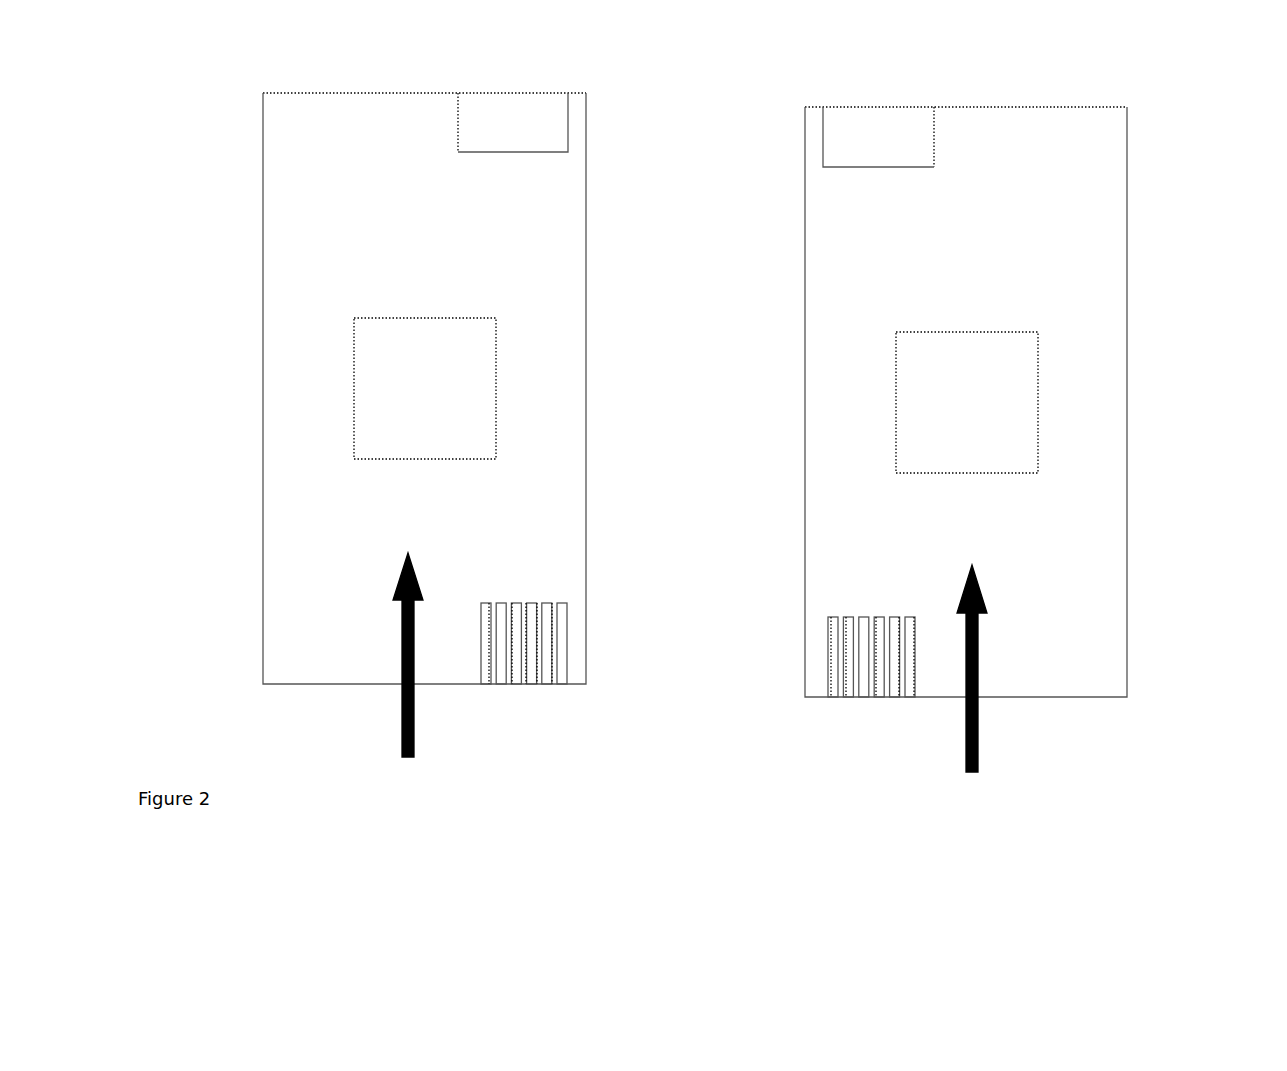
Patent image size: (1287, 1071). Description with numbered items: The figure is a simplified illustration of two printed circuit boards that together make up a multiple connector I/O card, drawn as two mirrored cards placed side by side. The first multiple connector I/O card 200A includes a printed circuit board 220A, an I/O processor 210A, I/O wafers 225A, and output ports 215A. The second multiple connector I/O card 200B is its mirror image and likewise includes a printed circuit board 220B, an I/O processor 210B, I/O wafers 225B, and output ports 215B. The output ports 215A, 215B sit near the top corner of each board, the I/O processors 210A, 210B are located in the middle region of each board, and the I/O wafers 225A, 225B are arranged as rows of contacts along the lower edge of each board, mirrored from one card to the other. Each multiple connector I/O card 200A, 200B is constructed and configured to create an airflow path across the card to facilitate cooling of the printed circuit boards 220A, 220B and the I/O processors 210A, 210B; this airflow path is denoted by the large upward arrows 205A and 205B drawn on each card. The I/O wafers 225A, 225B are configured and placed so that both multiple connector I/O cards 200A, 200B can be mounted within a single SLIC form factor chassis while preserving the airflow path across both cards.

The multiple connector I/O card 200A is at (630, 183).
The multiple connector I/O card 200B is at (1172, 197).
The arrow 205A is at (403, 735).
The arrow 205B is at (978, 733).
The I/O processor 210A is at (478, 352).
The I/O processor 210B is at (1019, 366).
The output ports 215A is at (513, 123).
The output ports 215B is at (877, 137).
The printed circuit board 220A is at (290, 228).
The printed circuit board 220B is at (831, 240).
The I/O wafers 225A is at (556, 684).
The I/O wafers 225B is at (909, 697).